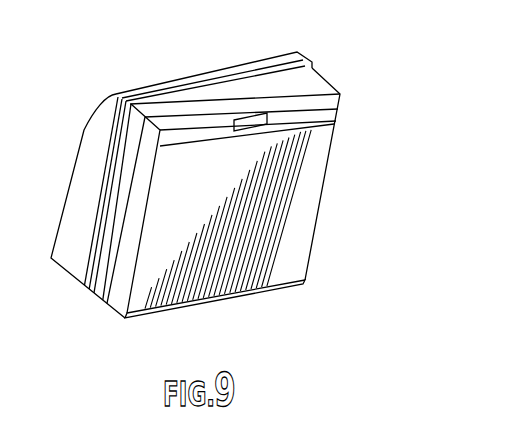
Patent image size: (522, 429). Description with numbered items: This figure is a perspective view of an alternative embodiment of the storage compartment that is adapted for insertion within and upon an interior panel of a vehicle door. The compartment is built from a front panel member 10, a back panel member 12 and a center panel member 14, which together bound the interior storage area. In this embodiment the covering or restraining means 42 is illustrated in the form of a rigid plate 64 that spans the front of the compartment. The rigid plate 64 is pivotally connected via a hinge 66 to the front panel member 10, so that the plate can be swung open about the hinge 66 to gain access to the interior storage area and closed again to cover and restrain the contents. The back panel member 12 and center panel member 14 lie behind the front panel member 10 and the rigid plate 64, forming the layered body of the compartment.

The front panel member 10 is at (325, 86).
The back panel member 12 is at (308, 66).
The center panel member 14 is at (86, 152).
The covering or restraining means 42 is at (328, 137).
The rigid plate 64 is at (306, 184).
The hinge 66 is at (308, 282).